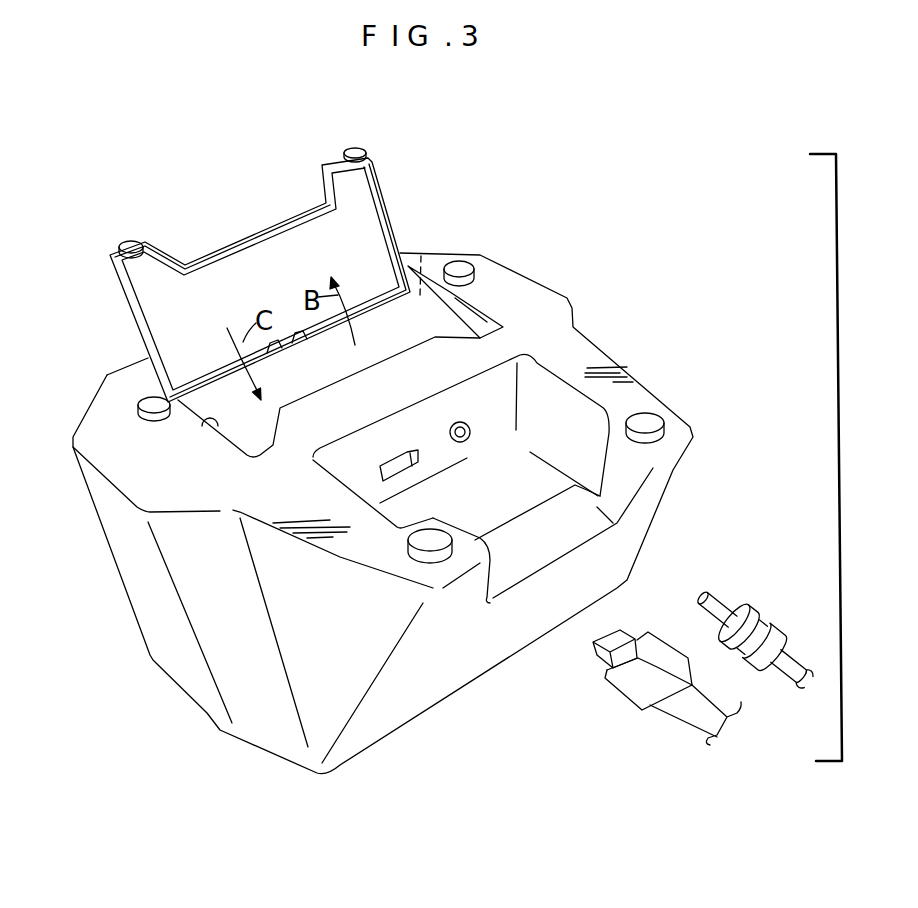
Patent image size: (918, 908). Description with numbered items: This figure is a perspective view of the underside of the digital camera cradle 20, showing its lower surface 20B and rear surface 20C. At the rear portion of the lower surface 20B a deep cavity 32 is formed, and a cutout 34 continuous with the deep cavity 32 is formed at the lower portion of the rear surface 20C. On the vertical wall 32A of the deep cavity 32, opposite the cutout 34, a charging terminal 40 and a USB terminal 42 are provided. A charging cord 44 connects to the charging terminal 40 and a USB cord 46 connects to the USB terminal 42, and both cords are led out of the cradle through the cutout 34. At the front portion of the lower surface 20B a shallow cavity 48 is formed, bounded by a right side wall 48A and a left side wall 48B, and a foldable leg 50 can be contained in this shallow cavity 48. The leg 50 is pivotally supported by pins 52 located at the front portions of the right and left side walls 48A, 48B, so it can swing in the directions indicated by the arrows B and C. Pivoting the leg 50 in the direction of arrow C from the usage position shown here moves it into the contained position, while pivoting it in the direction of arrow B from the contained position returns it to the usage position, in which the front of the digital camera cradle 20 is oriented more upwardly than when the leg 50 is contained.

The digital camera cradle 20 is at (570, 291).
The lower surface 20B is at (560, 344).
The rear surface 20C is at (648, 500).
The deep cavity 32 is at (577, 417).
The vertical wall 32A is at (500, 418).
The cutout 34 is at (620, 460).
The charging terminal 40 is at (460, 420).
The USB terminal 42 is at (408, 445).
The charging cord 44 is at (753, 612).
The USB cord 46 is at (640, 683).
The shallow cavity 48 is at (429, 323).
The right side wall 48A is at (486, 321).
The left side wall 48B is at (203, 427).
The foldable leg 50 is at (372, 227).
The pins 52 is at (137, 398).